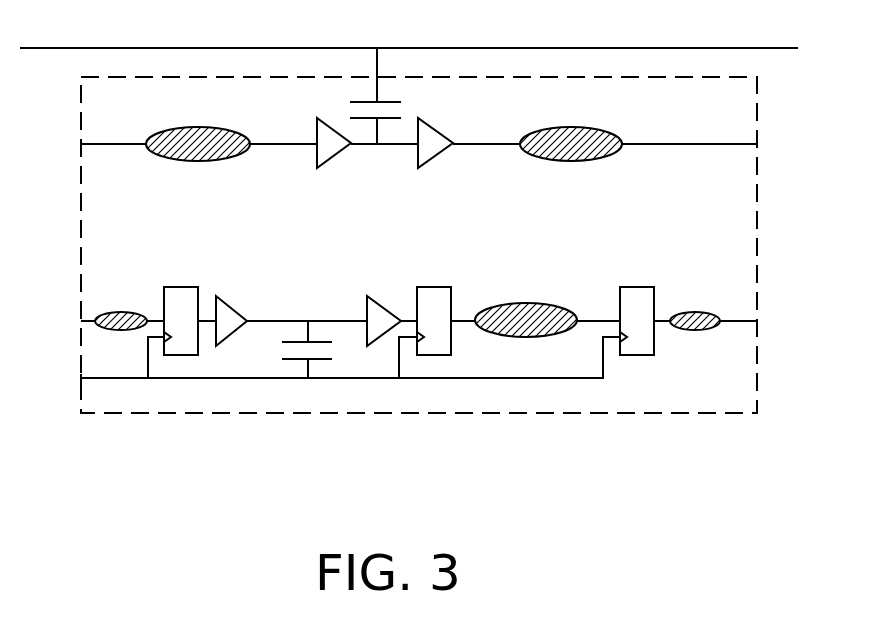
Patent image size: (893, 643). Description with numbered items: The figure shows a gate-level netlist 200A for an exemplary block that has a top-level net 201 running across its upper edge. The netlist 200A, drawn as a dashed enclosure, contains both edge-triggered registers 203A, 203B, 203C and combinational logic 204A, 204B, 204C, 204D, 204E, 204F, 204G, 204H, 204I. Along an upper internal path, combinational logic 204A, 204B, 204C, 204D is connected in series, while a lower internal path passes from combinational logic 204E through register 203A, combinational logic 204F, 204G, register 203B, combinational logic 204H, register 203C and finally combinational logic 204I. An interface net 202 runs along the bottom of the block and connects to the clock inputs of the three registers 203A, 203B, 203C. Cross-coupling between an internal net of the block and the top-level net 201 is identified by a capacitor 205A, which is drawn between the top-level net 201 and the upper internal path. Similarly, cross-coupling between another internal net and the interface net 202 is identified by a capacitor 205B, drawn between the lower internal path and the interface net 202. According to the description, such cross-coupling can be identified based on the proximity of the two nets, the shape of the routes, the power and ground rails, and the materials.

The top-level net 201 is at (409, 25).
The gate-level netlist 200A is at (740, 115).
The interface net 202 is at (350, 360).
The edge-triggered register 203A is at (185, 305).
The edge-triggered register 203B is at (435, 306).
The edge-triggered register 203C is at (640, 307).
The combinational logic 204A is at (198, 159).
The combinational logic 204B is at (326, 158).
The combinational logic 204C is at (433, 158).
The combinational logic 204D is at (571, 161).
The combinational logic 204E is at (121, 308).
The combinational logic 204F is at (247, 314).
The combinational logic 204G is at (375, 308).
The combinational logic 204H is at (526, 300).
The combinational logic 204I is at (695, 337).
The capacitor 205A is at (349, 96).
The capacitor 205B is at (280, 349).